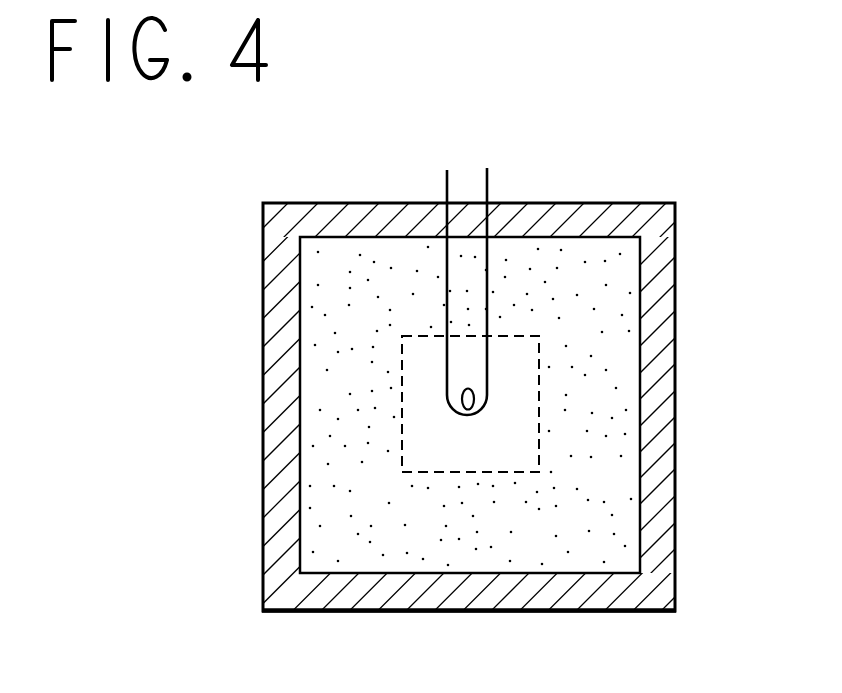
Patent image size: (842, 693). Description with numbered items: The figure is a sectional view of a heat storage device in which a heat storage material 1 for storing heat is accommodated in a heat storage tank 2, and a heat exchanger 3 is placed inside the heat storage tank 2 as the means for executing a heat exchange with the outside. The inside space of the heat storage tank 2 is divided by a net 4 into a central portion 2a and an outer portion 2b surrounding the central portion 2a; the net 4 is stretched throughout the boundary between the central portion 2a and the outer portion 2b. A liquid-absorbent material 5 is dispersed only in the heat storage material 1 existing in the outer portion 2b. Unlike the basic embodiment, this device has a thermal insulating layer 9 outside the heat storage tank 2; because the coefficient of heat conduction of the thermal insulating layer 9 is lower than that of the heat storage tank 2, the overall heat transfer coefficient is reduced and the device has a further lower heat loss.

The heat storage material 1 is at (613, 278).
The heat storage tank 2 is at (637, 350).
The central portion 2a is at (468, 453).
The outer portion 2b is at (610, 447).
The heat exchanger 3 is at (487, 182).
The net 4 is at (402, 375).
The liquid-absorbent material 5 is at (347, 555).
The thermal insulating layer 9 is at (660, 548).